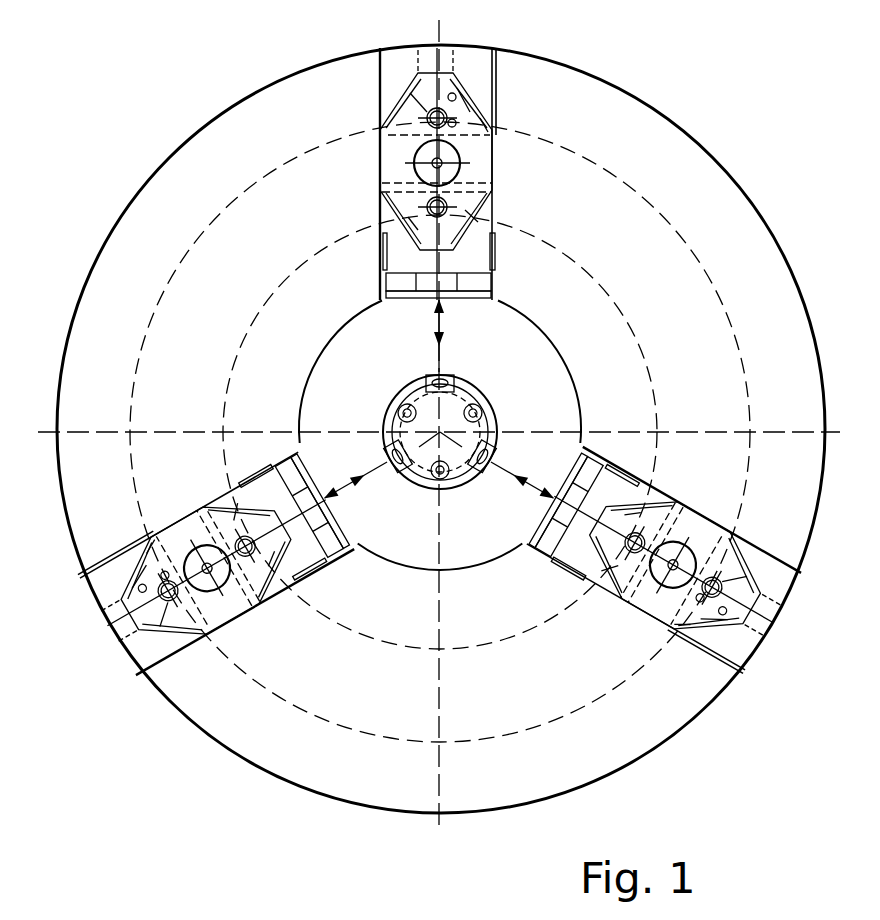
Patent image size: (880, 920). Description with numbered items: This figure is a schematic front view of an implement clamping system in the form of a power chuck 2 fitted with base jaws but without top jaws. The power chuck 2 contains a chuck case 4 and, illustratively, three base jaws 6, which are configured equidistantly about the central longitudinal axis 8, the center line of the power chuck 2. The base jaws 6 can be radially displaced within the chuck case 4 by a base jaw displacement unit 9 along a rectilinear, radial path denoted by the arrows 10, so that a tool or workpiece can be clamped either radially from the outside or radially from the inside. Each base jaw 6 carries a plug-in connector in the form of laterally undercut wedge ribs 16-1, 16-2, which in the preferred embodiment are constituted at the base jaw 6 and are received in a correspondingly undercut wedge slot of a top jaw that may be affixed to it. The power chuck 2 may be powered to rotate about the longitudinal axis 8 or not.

The power chuck 2 is at (664, 82).
The chuck case 4 is at (705, 233).
The base jaw 6 is at (388, 162).
The central longitudinal axis 8 is at (441, 431).
The base jaw displacement unit 9 is at (710, 330).
The arrows 10 is at (437, 323).
The wedge rib 16-1 is at (603, 563).
The wedge rib 16-2 is at (713, 625).